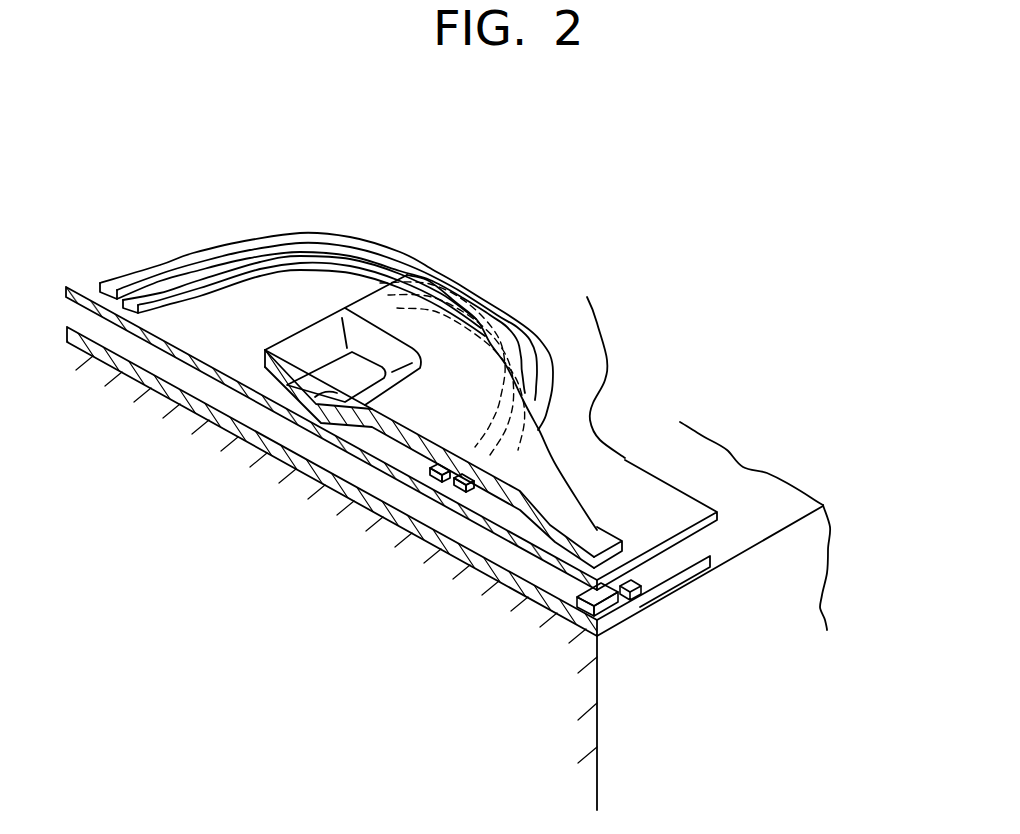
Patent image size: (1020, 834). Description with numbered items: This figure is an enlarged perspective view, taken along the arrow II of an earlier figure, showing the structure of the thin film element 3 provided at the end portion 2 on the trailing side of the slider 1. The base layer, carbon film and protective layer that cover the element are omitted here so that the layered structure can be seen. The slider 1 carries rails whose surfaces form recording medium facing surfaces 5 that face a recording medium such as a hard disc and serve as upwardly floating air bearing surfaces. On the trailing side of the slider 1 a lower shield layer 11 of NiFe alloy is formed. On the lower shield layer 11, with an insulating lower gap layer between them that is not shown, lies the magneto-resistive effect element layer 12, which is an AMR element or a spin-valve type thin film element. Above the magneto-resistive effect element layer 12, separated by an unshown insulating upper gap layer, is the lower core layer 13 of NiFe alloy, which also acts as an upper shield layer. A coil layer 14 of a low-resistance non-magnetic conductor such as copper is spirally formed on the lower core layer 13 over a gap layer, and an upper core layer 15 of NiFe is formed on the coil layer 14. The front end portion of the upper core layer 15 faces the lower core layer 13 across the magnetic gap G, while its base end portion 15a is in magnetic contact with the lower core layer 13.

The slider 1 is at (416, 643).
The end portion 2 is at (773, 482).
The thin film element 3 is at (622, 338).
The recording medium facing surfaces 5 is at (813, 612).
The lower shield layer 11 is at (702, 575).
The magneto-resistive effect element layer 12 is at (630, 592).
The lower core layer 13 is at (623, 457).
The coil layer 14 is at (193, 253).
The upper core layer 15 is at (388, 443).
The base end portion 15a is at (294, 412).
The magnetic gap G is at (648, 567).
The arrow II is at (742, 659).